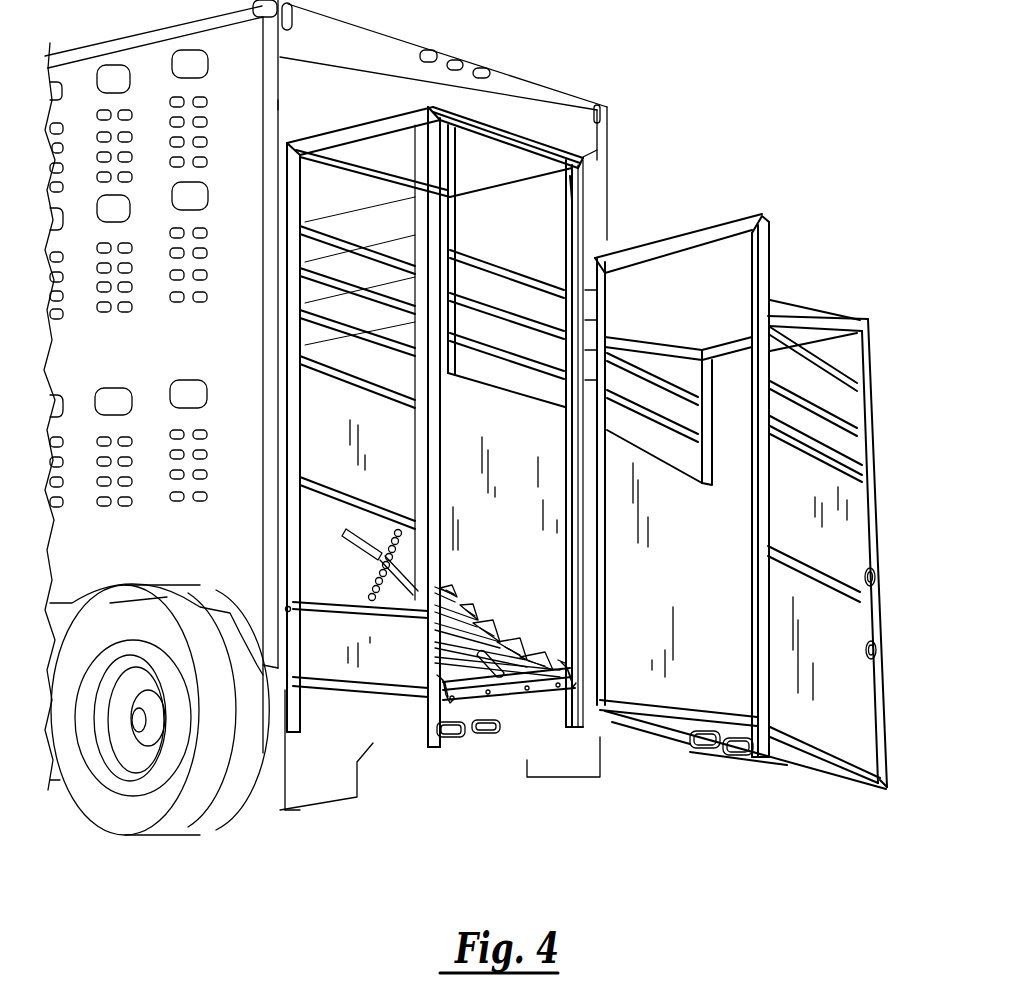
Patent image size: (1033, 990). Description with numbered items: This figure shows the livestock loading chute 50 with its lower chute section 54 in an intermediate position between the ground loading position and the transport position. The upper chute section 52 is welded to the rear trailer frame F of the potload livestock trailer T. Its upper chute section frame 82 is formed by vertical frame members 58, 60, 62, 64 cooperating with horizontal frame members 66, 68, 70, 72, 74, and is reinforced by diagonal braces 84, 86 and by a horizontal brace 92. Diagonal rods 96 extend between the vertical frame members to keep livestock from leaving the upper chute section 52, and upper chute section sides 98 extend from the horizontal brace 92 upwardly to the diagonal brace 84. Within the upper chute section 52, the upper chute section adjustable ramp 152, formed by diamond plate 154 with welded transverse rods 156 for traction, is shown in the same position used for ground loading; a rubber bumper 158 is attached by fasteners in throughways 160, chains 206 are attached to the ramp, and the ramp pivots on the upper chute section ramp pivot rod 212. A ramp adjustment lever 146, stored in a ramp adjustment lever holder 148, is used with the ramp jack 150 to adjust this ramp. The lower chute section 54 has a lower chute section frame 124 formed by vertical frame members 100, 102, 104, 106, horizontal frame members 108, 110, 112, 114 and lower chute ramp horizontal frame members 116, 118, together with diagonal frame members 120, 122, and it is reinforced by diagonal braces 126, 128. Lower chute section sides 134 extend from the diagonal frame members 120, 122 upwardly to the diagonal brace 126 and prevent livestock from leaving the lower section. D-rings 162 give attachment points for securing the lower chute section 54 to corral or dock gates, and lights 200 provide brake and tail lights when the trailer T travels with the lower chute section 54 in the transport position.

The potload livestock trailer T is at (547, 68).
The rear trailer frame F is at (277, 107).
The livestock loading chute 50 is at (690, 128).
The upper chute section 52 is at (441, 449).
The lower chute section 54 is at (760, 501).
The vertical frame member 58 is at (298, 442).
The vertical frame member 60 is at (455, 230).
The vertical frame member 62 is at (440, 432).
The vertical frame member 64 is at (566, 203).
The horizontal frame member 66 is at (377, 113).
The horizontal frame member 68 is at (463, 120).
The horizontal frame member 70 is at (377, 168).
The horizontal frame member 72 is at (513, 187).
The horizontal frame member 74 is at (313, 620).
The upper chute section frame 82 is at (523, 132).
The diagonal brace 84 is at (373, 402).
The diagonal brace 86 is at (360, 493).
The horizontal brace 92 is at (338, 692).
The diagonal rods 96 is at (333, 237).
The upper chute section sides 98 is at (347, 465).
The vertical frame member 100 is at (768, 540).
The vertical frame member 102 is at (852, 551).
The vertical frame member 104 is at (717, 471).
The vertical frame member 106 is at (612, 318).
The horizontal frame member 108 is at (793, 307).
The horizontal frame member 110 is at (713, 240).
The horizontal frame member 112 is at (667, 337).
The horizontal frame member 114 is at (828, 342).
The lower chute ramp horizontal frame member 116 is at (820, 777).
The lower chute ramp horizontal frame member 118 is at (660, 715).
The diagonal frame member 120 is at (810, 733).
The diagonal frame member 122 is at (687, 753).
The lower chute section frame 124 is at (877, 428).
The diagonal brace 126 is at (823, 460).
The diagonal brace 128 is at (847, 597).
The lower chute section sides 134 is at (675, 589).
The ramp adjustment lever 146 is at (347, 533).
The ramp adjustment lever holder 148 is at (377, 570).
The ramp jack 150 is at (513, 647).
The upper chute section adjustable ramp 152 is at (497, 619).
The diamond plate 154 is at (500, 623).
The transverse rods 156 is at (457, 587).
The rubber bumper 158 is at (543, 695).
The throughways 160 is at (528, 700).
The D-rings 162 is at (877, 632).
The lights 200 is at (712, 750).
The chains 206 is at (450, 742).
The upper chute section ramp pivot rod 212 is at (286, 609).